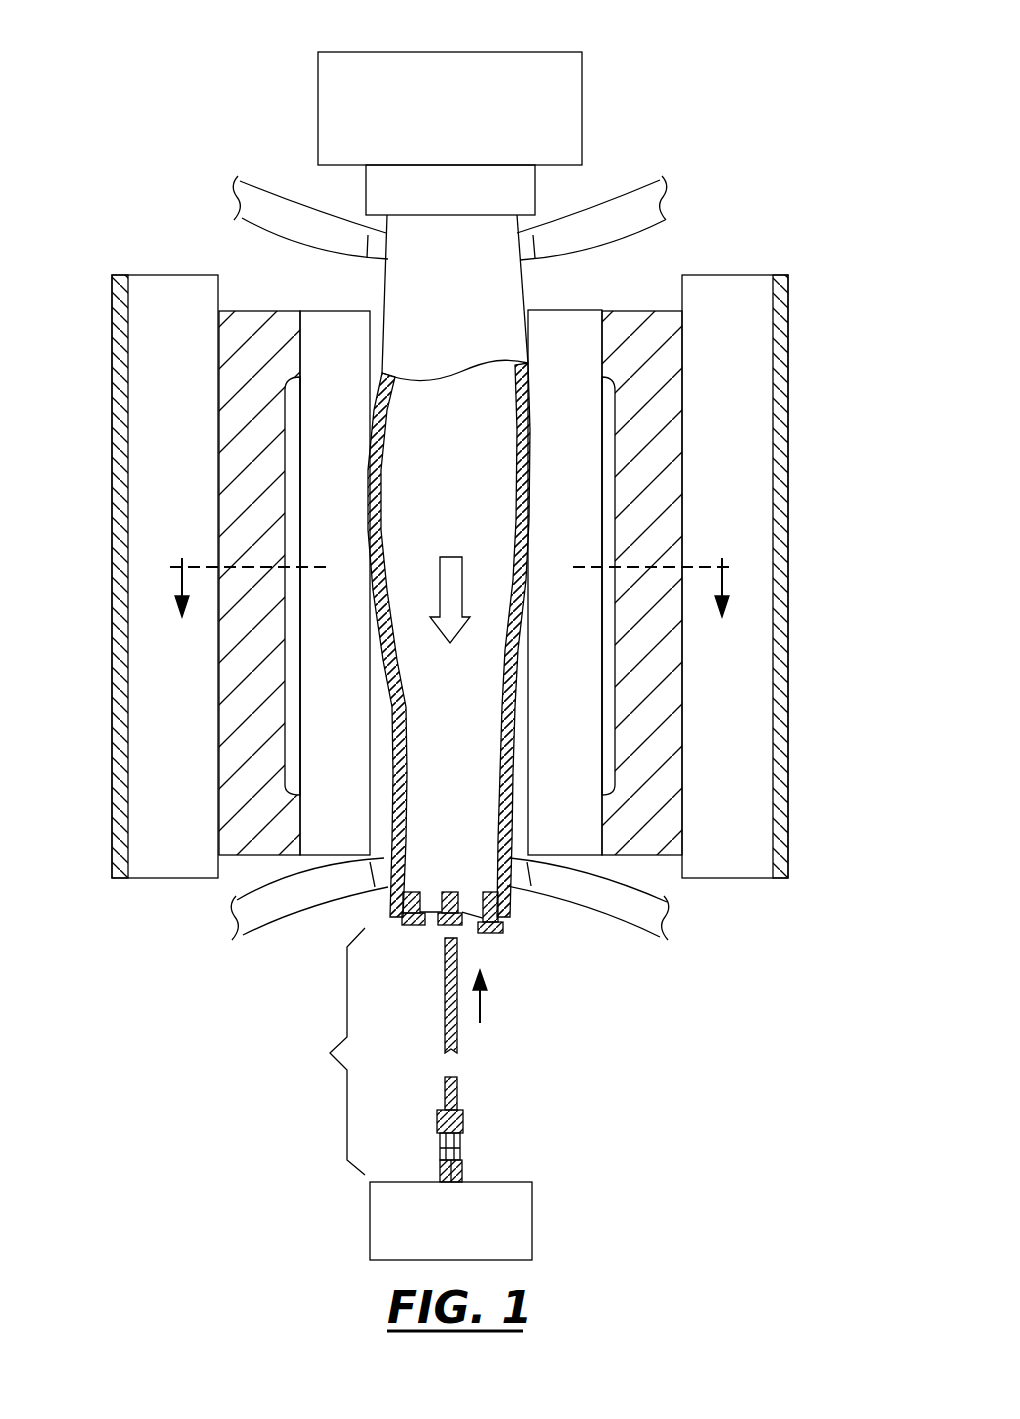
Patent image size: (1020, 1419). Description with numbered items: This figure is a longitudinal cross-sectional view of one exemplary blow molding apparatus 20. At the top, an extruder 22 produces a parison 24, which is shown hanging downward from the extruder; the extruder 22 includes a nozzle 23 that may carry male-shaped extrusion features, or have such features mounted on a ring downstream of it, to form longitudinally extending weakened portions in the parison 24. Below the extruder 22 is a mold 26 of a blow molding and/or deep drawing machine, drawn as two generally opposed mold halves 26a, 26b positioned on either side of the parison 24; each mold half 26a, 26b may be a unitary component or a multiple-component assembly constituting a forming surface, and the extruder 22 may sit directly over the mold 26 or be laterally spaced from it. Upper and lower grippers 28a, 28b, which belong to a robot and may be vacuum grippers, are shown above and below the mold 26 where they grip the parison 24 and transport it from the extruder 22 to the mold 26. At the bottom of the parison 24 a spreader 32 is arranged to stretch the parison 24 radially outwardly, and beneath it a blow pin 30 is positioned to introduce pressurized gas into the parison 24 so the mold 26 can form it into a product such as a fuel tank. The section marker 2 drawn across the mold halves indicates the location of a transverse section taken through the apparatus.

The apparatus 20 is at (165, 112).
The extruder 22 is at (607, 53).
The nozzle 23 is at (348, 193).
The parison 24 is at (538, 287).
The mold 26 is at (446, 588).
The mold half 26a is at (170, 890).
The mold half 26b is at (670, 277).
The upper gripper 28a is at (321, 243).
The lower gripper 28b is at (280, 907).
The blow pin 30 is at (500, 1119).
The spreader 32 is at (416, 944).
The section line 2- 2 is at (451, 609).